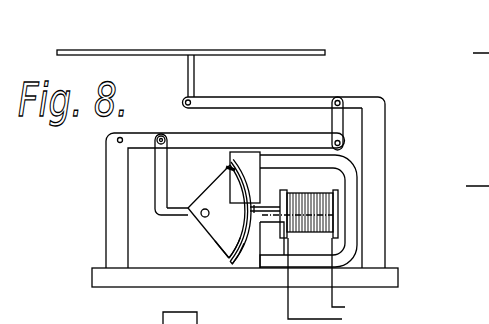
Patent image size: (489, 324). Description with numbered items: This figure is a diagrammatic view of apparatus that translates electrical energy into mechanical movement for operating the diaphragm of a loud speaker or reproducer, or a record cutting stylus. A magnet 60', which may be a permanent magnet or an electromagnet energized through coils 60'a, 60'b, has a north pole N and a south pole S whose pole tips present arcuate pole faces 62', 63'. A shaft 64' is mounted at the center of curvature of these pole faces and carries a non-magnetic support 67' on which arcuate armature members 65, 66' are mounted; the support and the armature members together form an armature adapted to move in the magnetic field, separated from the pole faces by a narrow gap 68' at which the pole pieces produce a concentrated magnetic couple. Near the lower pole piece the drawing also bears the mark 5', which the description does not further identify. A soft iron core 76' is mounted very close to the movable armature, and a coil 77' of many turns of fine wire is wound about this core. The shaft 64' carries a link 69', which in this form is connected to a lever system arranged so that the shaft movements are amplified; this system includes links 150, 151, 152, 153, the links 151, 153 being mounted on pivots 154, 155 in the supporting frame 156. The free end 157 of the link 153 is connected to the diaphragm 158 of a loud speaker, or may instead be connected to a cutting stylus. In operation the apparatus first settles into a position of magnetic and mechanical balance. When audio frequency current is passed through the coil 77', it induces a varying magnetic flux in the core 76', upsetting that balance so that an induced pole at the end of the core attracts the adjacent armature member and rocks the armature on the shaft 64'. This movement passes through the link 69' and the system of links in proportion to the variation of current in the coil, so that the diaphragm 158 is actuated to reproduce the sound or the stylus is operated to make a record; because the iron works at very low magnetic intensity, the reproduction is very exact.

The diaphragm 158 is at (228, 45).
The free end 157 is at (200, 101).
The pivot 155 is at (365, 97).
The link 153 is at (296, 100).
The link 152 is at (333, 133).
The link 151 is at (241, 130).
The pivot 154 is at (122, 137).
The link 150 is at (165, 150).
The link 69' is at (181, 197).
The supporting frame 156 is at (118, 280).
The magnet 60' is at (308, 211).
The north pole N is at (245, 177).
The south pole S is at (261, 245).
The pole face 62' is at (220, 160).
The armature member 65 is at (241, 211).
The non-magnetic support 67' is at (216, 211).
The gap 68' is at (210, 233).
The shaft 64' is at (190, 226).
The armature member 66' is at (235, 246).
The pole end 5' is at (244, 250).
The pole face 63' is at (217, 253).
The soft iron core 76' is at (291, 197).
The coil 77' is at (309, 216).
The coil 60'a is at (354, 276).
The coil 60'b is at (331, 281).